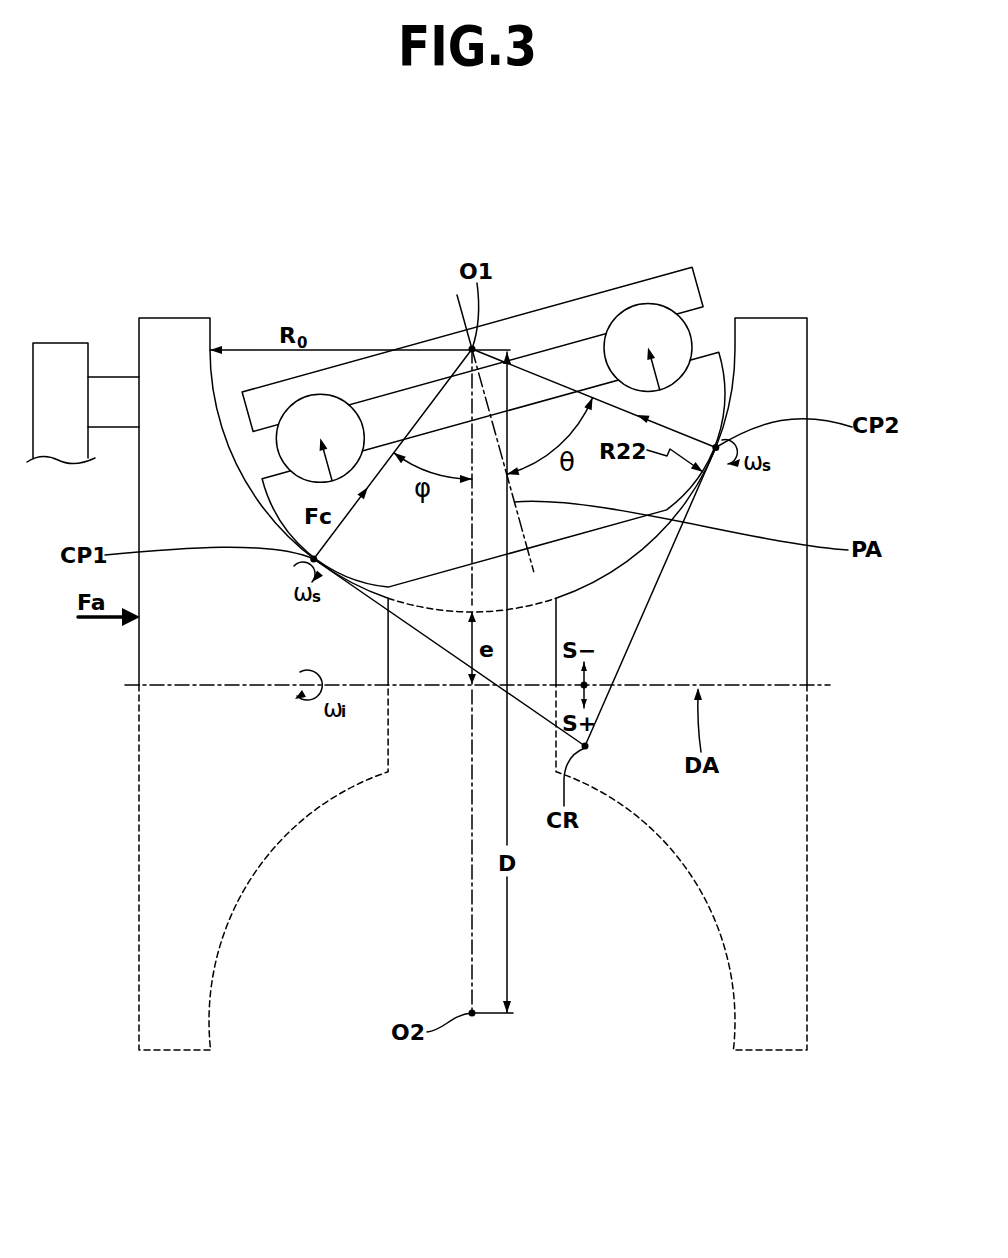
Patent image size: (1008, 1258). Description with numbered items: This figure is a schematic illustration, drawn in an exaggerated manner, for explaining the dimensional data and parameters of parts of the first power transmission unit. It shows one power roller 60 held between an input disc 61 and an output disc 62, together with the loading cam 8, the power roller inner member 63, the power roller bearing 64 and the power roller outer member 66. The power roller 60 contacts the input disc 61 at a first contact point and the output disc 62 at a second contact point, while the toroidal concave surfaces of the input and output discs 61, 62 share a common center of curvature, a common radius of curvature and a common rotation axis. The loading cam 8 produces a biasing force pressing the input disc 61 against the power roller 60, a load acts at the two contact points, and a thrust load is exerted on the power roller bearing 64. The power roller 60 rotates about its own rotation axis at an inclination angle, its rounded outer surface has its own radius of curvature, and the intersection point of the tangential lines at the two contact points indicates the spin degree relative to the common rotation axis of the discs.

The loading cam 8 is at (90, 335).
The power roller 60 is at (568, 384).
The input disc 61 is at (198, 660).
The output disc 62 is at (758, 635).
The power roller inner member 63 is at (705, 397).
The power roller bearing 64 is at (667, 308).
The power roller outer member 66 is at (556, 322).